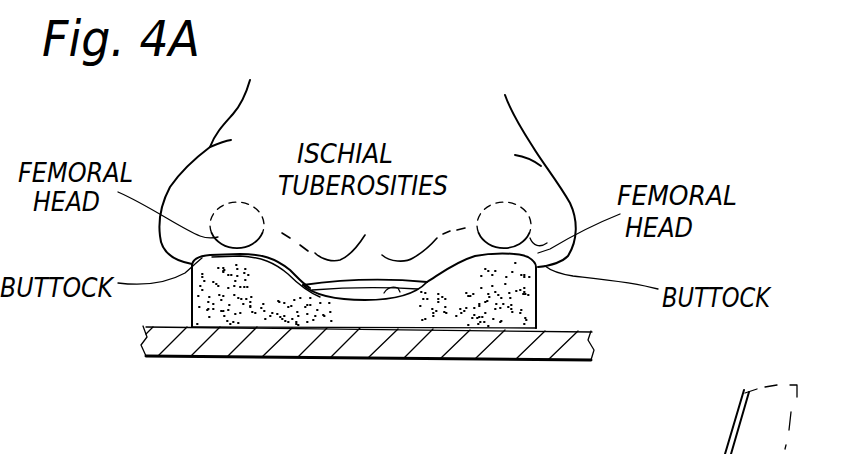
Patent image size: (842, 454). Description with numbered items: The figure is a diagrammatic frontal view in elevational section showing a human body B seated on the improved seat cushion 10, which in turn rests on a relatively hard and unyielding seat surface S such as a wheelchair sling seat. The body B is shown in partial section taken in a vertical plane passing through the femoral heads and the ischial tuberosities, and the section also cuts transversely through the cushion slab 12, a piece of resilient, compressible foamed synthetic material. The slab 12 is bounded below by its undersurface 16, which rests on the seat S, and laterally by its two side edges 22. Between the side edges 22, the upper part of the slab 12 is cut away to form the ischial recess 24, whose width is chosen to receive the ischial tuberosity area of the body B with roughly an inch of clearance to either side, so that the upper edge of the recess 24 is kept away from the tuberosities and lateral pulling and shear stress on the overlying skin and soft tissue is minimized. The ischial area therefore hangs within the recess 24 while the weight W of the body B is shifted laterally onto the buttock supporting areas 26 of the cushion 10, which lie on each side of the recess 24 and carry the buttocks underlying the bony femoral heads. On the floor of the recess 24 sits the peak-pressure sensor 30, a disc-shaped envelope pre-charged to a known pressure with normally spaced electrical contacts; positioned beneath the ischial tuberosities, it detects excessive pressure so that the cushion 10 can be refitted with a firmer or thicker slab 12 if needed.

The seat cushion 10 is at (156, 314).
The slab 12 is at (591, 342).
The undersurface 16 is at (330, 328).
The side edges 22 is at (192, 292).
The ischial recess 24 is at (398, 293).
The buttock supporting areas 26 is at (220, 243).
The peak-pressure sensor 30 is at (365, 290).
The body B is at (538, 136).
The weight W is at (238, 206).
The seat surface S is at (594, 353).